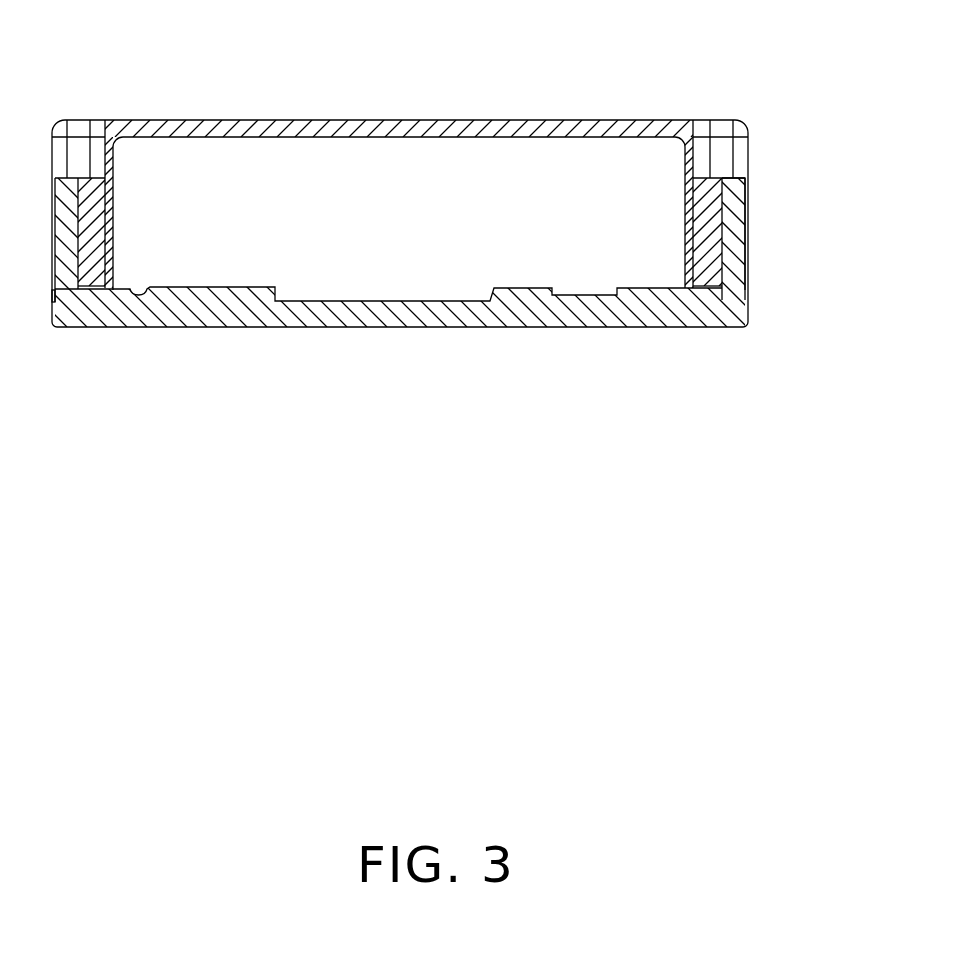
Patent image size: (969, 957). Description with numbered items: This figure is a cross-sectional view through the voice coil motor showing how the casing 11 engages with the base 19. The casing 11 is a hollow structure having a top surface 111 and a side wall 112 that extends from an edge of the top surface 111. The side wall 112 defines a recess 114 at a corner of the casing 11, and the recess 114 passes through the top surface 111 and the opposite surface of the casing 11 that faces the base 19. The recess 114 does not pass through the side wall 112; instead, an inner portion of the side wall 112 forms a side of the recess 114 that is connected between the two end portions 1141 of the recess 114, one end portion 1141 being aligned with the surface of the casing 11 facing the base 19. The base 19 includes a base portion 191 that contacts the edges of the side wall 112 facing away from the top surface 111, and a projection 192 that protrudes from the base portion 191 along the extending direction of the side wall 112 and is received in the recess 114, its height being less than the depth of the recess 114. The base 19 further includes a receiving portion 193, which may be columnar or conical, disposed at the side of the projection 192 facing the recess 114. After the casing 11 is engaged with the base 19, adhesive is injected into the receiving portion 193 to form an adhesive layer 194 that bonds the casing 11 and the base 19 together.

The casing 11 is at (222, 132).
The top surface 111 is at (477, 116).
The side wall 112 is at (687, 215).
The recess 114 is at (716, 152).
The end portion 1141 is at (706, 302).
The base 19 is at (742, 256).
The base portion 191 is at (778, 307).
The projection 192 is at (733, 268).
The receiving portion 193 is at (733, 195).
The adhesive layer 194 is at (718, 238).